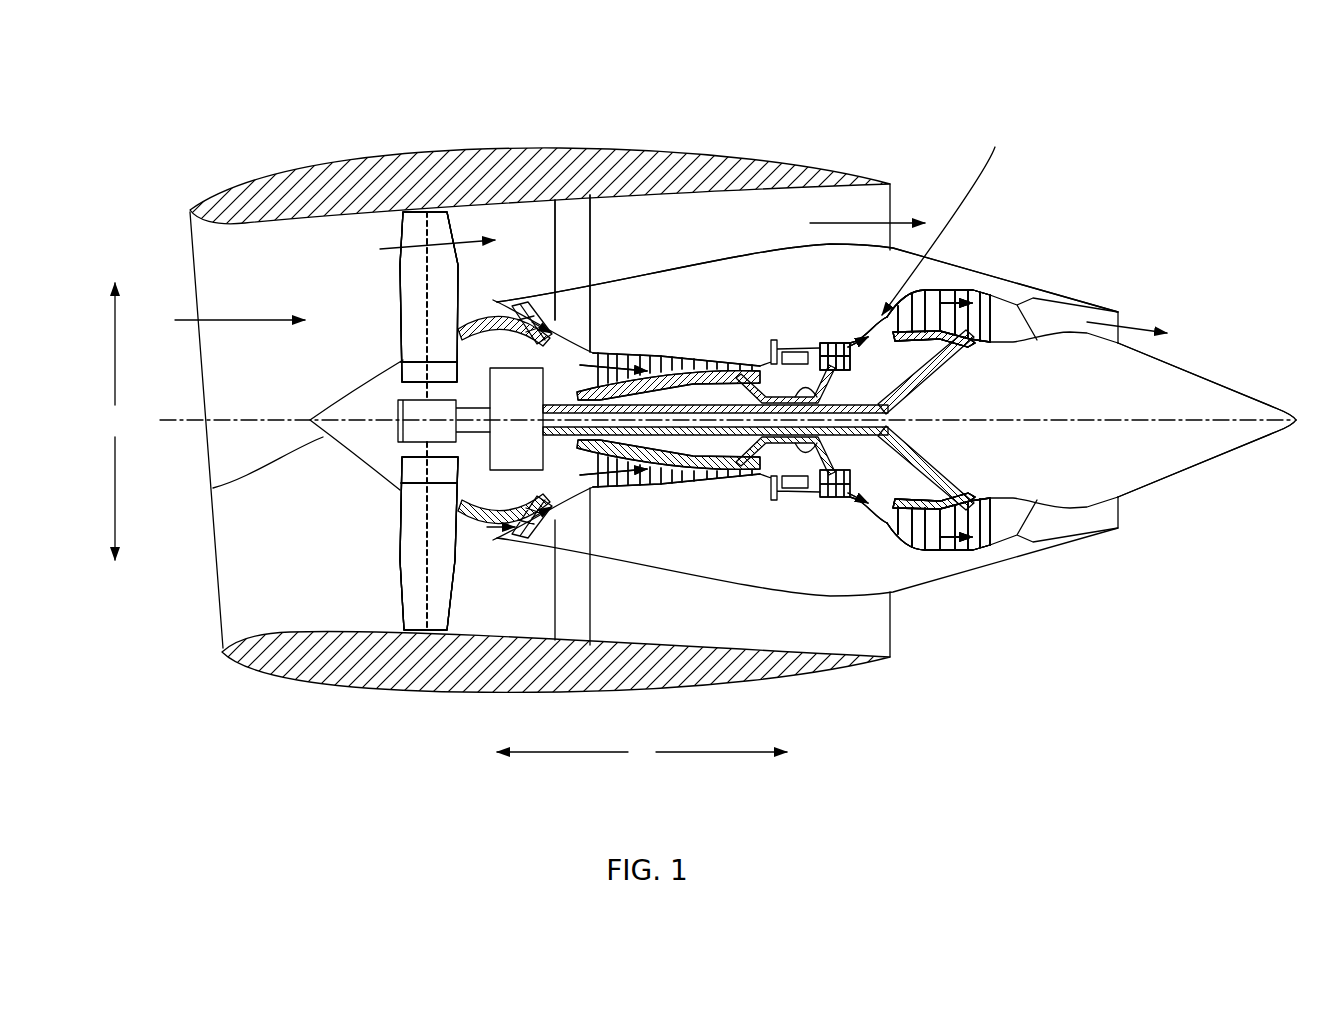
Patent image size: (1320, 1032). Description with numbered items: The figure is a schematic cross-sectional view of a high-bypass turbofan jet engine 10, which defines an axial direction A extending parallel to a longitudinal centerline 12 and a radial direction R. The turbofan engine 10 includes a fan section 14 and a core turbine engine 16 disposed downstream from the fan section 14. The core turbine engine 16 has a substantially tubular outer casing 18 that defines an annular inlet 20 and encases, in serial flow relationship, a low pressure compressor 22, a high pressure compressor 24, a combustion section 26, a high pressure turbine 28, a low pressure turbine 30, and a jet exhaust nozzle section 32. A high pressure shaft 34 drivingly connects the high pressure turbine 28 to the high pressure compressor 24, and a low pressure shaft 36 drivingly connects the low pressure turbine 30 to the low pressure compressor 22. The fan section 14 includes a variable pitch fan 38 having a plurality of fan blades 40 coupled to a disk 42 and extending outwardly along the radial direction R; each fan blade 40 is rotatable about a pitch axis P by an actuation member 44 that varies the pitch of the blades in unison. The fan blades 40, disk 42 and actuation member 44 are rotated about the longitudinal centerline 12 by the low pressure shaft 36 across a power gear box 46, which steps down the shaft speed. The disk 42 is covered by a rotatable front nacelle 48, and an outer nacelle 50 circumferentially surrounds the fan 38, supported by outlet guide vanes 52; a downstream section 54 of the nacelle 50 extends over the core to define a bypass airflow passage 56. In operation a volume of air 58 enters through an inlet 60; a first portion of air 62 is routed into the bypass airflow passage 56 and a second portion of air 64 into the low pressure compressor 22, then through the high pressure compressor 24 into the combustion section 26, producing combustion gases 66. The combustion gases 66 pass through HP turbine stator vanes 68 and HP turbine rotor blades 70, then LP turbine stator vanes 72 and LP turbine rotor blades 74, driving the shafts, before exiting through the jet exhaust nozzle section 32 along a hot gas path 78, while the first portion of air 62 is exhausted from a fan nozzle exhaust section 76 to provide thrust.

The turbofan jet engine 10 is at (1038, 155).
The longitudinal centerline 12 is at (1060, 418).
The fan section 14 is at (437, 115).
The core turbine engine 16 is at (760, 297).
The outer casing 18 is at (747, 588).
The annular inlet 20 is at (493, 527).
The low pressure compressor 22 is at (595, 488).
The high pressure compressor 24 is at (618, 478).
The combustion section 26 is at (793, 485).
The high pressure turbine 28 is at (903, 490).
The low pressure turbine 30 is at (977, 543).
The jet exhaust nozzle section 32 is at (1037, 530).
The high pressure shaft 34 is at (823, 373).
The low pressure shaft 36 is at (913, 387).
The variable pitch fan 38 is at (363, 475).
The fan blades 40 is at (398, 570).
The disk 42 is at (413, 375).
The actuation member 44 is at (397, 407).
The power gear box 46 is at (555, 382).
The front nacelle 48 is at (213, 488).
The outer nacelle 50 is at (440, 690).
The outlet guide vanes 52 is at (593, 222).
The downstream section 54 is at (837, 177).
The bypass airflow passage 56 is at (688, 245).
The volume of air 58 is at (245, 320).
The inlet 60 is at (222, 635).
The first portion of air 62 is at (417, 248).
The second portion of air 64 is at (480, 317).
The combustion gases 66 is at (933, 297).
The HP turbine stator vanes 68 is at (808, 483).
The HP turbine rotor blades 70 is at (840, 467).
The LP turbine stator vanes 72 is at (900, 527).
The LP turbine rotor blades 74 is at (910, 537).
The fan nozzle exhaust section 76 is at (883, 207).
The hot gas path 78 is at (945, 216).
The pitch axis P is at (453, 217).
The radial direction R is at (115, 421).
The axial direction A is at (642, 753).